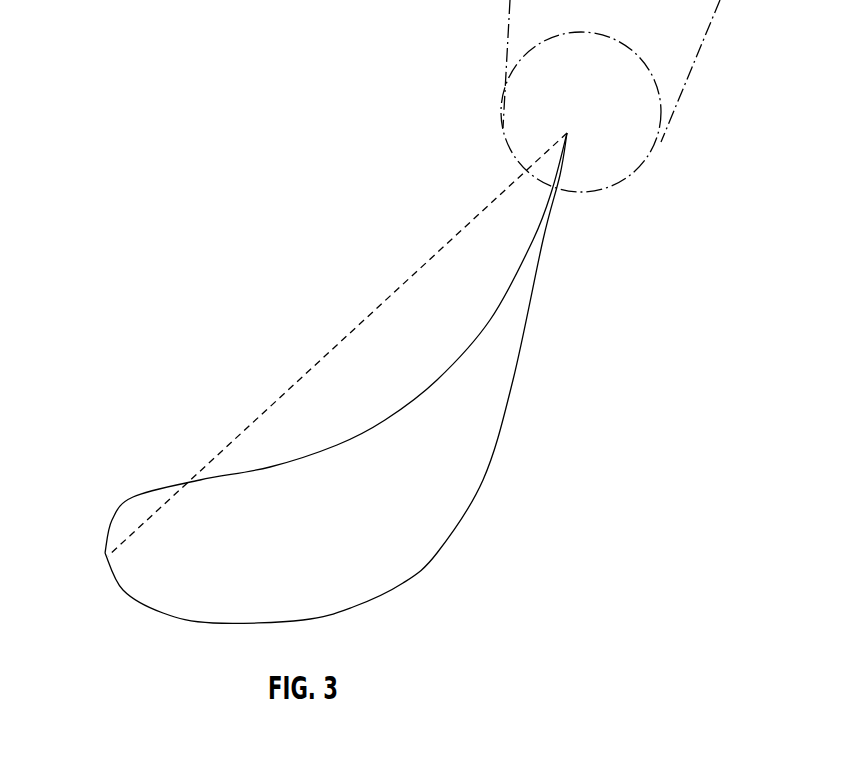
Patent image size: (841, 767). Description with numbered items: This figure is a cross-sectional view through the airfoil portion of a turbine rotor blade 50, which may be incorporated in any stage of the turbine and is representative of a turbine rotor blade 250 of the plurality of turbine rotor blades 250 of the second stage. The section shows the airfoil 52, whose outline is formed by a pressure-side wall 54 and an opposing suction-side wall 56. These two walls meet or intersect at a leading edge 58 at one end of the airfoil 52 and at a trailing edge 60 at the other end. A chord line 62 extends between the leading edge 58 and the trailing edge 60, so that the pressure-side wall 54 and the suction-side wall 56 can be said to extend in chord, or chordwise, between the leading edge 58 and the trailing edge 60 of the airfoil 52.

The turbine rotor blade 50 is at (222, 368).
The turbine rotor blade 250 is at (277, 314).
The airfoil 52 is at (362, 530).
The pressure-side wall 54 is at (467, 350).
The suction-side wall 56 is at (483, 480).
The leading edge 58 is at (106, 555).
The trailing edge 60 is at (567, 133).
The chord line 62 is at (383, 305).